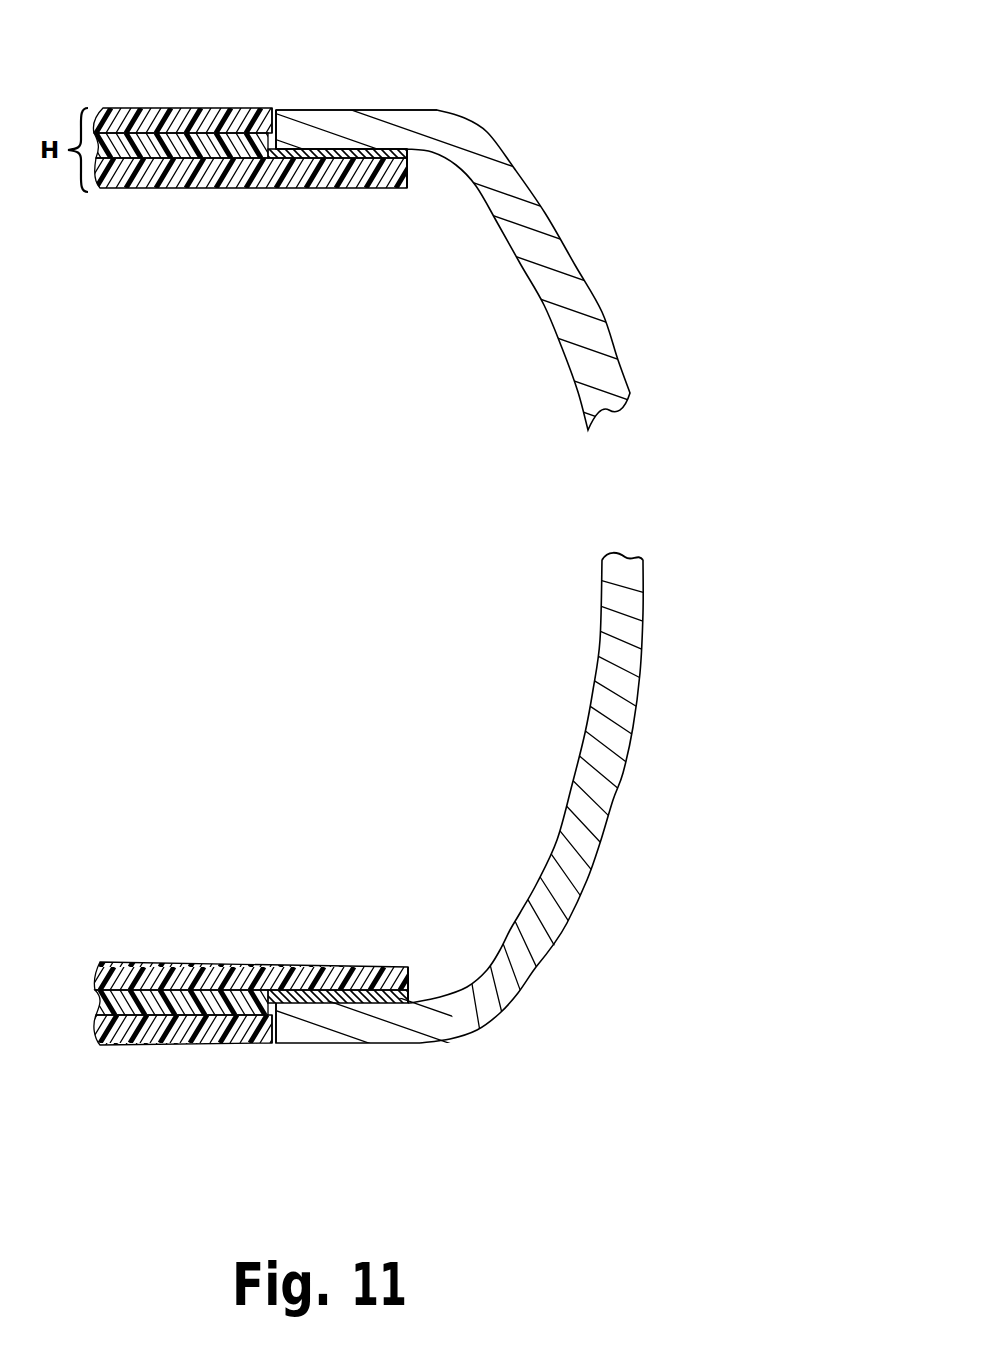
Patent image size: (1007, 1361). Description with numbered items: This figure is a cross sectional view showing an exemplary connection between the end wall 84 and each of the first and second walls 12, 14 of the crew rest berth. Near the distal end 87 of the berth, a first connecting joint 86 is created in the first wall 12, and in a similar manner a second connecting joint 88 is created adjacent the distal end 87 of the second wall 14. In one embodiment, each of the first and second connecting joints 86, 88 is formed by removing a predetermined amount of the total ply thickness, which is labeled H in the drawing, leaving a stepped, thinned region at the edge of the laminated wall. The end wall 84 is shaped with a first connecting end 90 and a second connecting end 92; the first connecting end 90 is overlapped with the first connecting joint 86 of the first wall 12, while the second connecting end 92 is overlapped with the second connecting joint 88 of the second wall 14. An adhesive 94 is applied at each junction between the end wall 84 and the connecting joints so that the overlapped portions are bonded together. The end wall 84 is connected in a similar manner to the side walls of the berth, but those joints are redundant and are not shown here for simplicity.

The first wall 12 is at (157, 117).
The second wall 14 is at (210, 1038).
The end wall 84 is at (583, 303).
The first connecting joint 86 is at (277, 108).
The distal end 87 is at (408, 166).
The second connecting joint 88 is at (282, 1045).
The first connecting end 90 is at (340, 123).
The second connecting end 92 is at (383, 1032).
The adhesive 94 is at (337, 158).